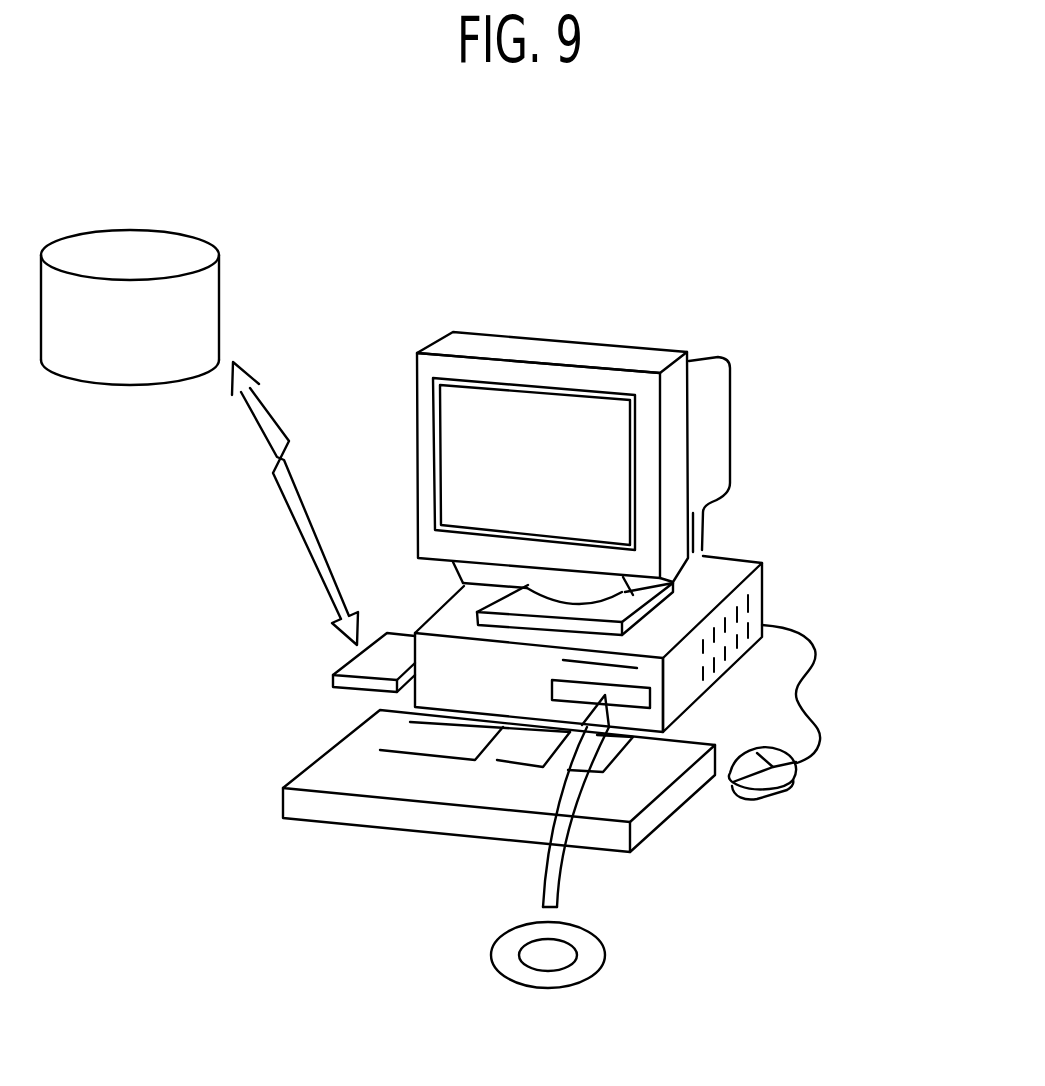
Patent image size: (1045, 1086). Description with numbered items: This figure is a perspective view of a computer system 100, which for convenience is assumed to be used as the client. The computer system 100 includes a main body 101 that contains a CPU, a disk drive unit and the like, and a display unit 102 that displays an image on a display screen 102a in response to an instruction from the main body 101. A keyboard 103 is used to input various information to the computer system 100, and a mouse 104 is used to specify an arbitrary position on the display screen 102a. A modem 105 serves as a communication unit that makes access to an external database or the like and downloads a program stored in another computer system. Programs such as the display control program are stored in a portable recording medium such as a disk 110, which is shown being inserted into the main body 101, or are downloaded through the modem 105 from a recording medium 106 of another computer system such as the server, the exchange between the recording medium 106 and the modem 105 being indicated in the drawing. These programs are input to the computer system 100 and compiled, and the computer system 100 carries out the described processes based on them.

The computer system 100 is at (713, 262).
The main body 101 is at (750, 557).
The display unit 102 is at (583, 444).
The display screen 102a is at (490, 410).
The keyboard 103 is at (340, 763).
The mouse 104 is at (763, 787).
The modem 105 is at (345, 662).
The recording medium 106 is at (193, 238).
The disk 110 is at (605, 952).